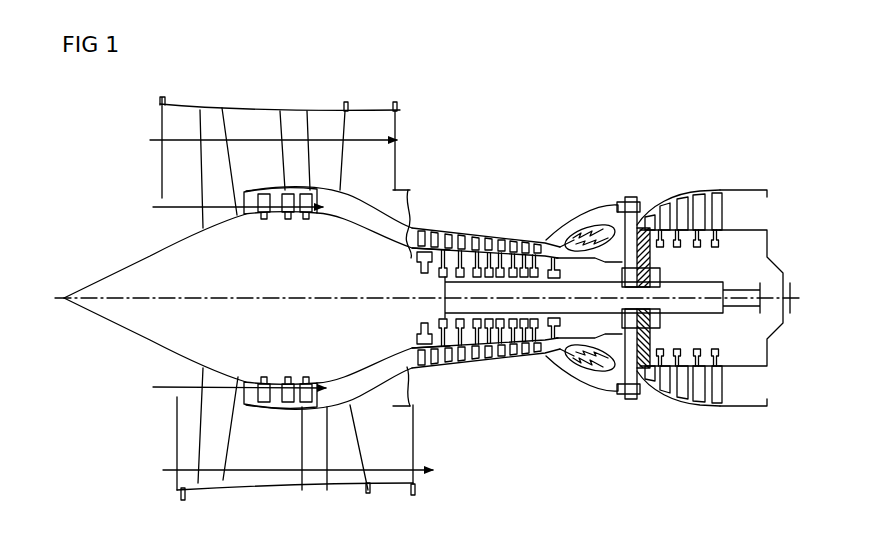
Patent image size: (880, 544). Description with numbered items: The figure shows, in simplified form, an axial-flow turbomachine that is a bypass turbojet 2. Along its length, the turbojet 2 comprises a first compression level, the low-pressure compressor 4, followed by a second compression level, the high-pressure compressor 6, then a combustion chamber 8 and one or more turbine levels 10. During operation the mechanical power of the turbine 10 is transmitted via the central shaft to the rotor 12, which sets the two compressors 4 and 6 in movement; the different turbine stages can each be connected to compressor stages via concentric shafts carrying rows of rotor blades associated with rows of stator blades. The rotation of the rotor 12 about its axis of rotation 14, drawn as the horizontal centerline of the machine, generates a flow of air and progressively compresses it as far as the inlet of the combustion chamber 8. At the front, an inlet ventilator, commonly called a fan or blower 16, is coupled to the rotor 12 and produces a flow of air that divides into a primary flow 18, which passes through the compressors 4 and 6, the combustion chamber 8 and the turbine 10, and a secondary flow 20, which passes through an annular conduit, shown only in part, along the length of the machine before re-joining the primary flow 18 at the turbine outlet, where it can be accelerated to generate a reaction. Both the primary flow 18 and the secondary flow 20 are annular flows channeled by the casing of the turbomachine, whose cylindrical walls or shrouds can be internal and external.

The turbojet 2 is at (582, 128).
The low-pressure compressor 4 is at (263, 220).
The high-pressure compressor 6 is at (453, 242).
The combustion chamber 8 is at (577, 243).
The turbine 10 is at (701, 210).
The rotor 12 is at (136, 323).
The axis of rotation 14 is at (294, 301).
The fan 16 is at (215, 165).
The primary flow 18 is at (228, 297).
The secondary flow 20 is at (277, 304).